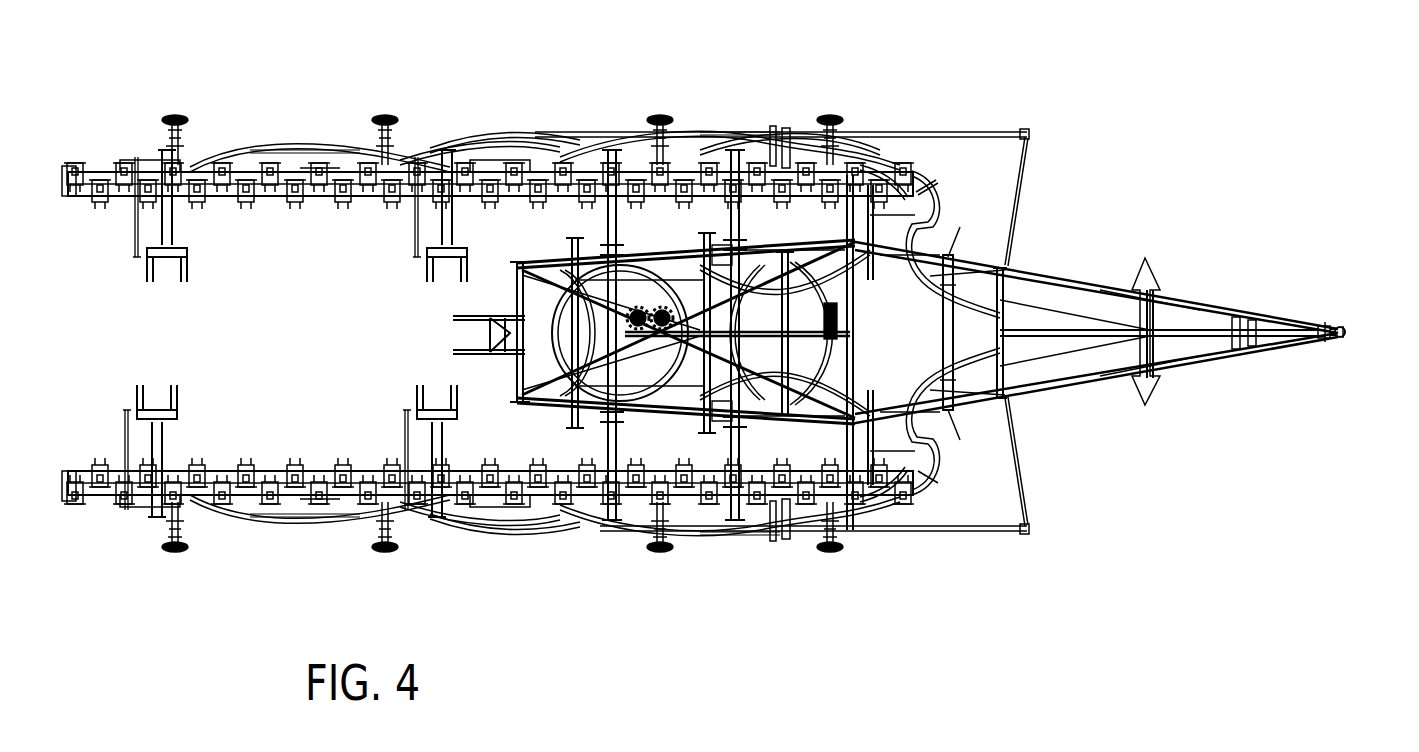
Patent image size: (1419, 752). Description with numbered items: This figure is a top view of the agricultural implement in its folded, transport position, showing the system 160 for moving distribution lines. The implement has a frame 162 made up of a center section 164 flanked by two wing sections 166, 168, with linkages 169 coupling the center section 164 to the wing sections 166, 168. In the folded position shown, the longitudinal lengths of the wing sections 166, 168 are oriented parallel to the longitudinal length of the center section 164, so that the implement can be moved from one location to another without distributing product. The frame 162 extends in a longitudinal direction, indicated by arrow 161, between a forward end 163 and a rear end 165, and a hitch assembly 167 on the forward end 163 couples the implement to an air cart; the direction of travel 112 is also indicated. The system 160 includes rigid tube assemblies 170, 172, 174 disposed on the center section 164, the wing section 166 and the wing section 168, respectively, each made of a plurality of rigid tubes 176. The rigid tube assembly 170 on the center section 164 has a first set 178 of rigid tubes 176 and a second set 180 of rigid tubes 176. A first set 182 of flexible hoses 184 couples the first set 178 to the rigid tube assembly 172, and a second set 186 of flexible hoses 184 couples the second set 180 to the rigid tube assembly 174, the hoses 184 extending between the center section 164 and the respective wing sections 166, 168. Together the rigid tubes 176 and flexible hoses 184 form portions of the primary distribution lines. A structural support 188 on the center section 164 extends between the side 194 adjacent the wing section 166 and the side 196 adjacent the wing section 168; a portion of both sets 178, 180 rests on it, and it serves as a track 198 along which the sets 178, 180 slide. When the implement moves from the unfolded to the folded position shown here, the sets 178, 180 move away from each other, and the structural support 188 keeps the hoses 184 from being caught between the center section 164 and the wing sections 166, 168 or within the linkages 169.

The direction of travel 112 is at (922, 681).
The system 160 is at (950, 415).
The longitudinal direction arrow 161 is at (662, 681).
The frame 162 is at (1097, 268).
The forward end 163 is at (1350, 332).
The center section 164 is at (1063, 262).
The rear end 165 is at (112, 340).
The wing section 166 is at (553, 550).
The hitch assembly 167 is at (1335, 325).
The wing section 168 is at (553, 120).
The linkages 169 is at (1000, 132).
The rigid tube assembly 170 is at (968, 422).
The rigid tube assembly 172 is at (776, 540).
The rigid tube assembly 174 is at (790, 130).
The rigid tubes 176 is at (755, 130).
The first set of rigid tubes 178 is at (1025, 395).
The second set of rigid tubes 180 is at (975, 270).
The first set of flexible hoses 182 is at (905, 505).
The flexible hoses 184 is at (895, 162).
The second set of flexible hoses 186 is at (876, 130).
The structural support 188 is at (962, 305).
The side 194 is at (948, 450).
The side 196 is at (966, 256).
The track 198 is at (938, 248).